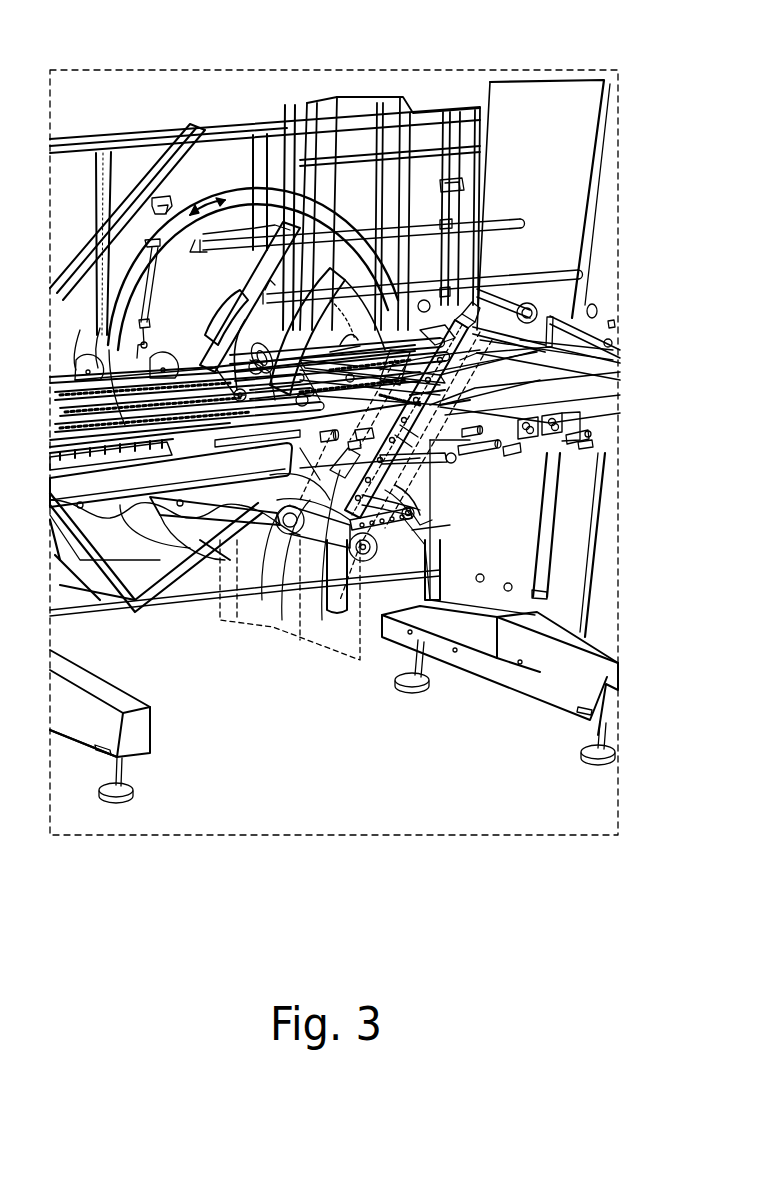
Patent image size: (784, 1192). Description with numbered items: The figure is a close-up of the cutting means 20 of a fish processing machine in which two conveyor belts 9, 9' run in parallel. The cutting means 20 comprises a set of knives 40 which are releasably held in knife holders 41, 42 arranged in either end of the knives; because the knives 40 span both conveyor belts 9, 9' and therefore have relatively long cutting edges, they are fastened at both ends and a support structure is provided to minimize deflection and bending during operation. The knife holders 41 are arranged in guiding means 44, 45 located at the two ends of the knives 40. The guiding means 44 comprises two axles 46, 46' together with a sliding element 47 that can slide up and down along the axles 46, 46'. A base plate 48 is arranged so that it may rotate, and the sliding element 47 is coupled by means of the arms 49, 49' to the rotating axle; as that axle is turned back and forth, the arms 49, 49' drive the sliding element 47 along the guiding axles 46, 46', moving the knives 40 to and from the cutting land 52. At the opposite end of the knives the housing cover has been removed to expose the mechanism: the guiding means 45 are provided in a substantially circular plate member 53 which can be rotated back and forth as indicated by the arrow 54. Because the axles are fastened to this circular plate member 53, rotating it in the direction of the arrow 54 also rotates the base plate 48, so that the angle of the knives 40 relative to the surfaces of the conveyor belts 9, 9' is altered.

The conveyor belt 9 is at (549, 410).
The conveyor belt 9' is at (420, 377).
The cutting means 20 is at (452, 535).
The knives 40 is at (400, 310).
The knife holder 41 is at (283, 395).
The knife holder 42 is at (440, 480).
The guiding means 44 is at (445, 495).
The guiding means 45 is at (278, 296).
The axle 46 is at (583, 345).
The axle 46' is at (582, 323).
The sliding element 47 is at (300, 467).
The base plate 48 is at (440, 515).
The arm 49 is at (350, 488).
The arm 49' is at (369, 517).
The cutting land 52 is at (440, 360).
The circular plate member 53 is at (205, 310).
The arrow 54 is at (205, 188).